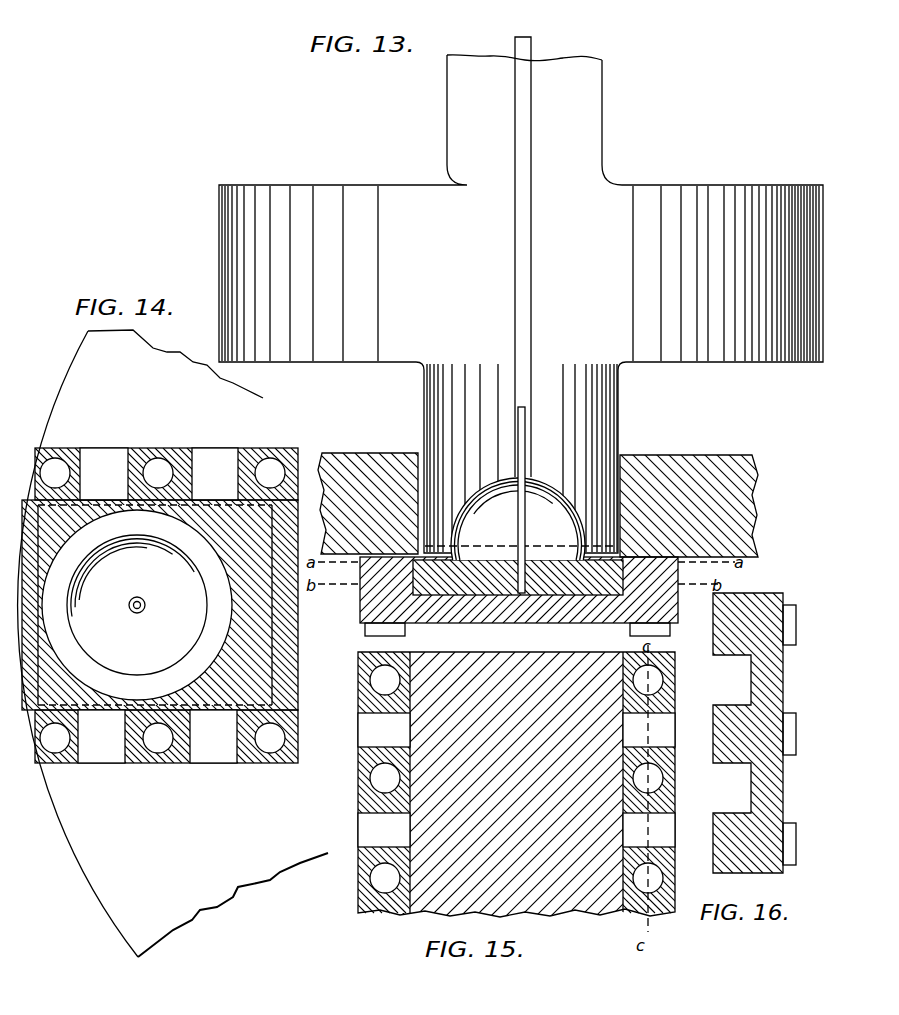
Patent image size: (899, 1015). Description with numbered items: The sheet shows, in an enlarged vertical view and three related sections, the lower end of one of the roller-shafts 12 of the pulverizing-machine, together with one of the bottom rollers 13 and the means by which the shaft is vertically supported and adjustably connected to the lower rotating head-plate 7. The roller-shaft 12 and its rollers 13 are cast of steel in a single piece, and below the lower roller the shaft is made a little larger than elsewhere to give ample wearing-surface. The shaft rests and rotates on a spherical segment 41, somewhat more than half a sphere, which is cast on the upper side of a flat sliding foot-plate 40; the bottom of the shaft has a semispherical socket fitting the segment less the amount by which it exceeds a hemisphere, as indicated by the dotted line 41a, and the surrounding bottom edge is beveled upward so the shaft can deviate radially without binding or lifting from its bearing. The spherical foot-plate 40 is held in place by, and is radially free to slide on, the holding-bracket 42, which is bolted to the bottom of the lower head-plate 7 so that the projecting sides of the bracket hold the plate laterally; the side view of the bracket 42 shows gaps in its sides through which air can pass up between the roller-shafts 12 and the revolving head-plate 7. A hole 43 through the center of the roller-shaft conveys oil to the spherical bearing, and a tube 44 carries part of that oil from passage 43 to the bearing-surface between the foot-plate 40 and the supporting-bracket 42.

In FIG. 13, the lower rotating head-plate 7 is at (359, 454).
In FIG. 14, the lower rotating head-plate 7 is at (173, 643).
In FIG. 13, the roller-shaft 12 is at (603, 100).
In FIG. 14, the roller-shaft 12 is at (137, 605).
In FIG. 13, the roller 13 is at (300, 263).
In FIG. 13, the spherical sliding foot-plate 40 is at (413, 574).
In FIG. 14, the spherical sliding foot-plate 40 is at (93, 512).
In FIG. 13, the spherical segment 41 is at (520, 519).
In FIG. 14, the spherical segment 41 is at (137, 605).
In FIG. 13, the dotted line indicating the hemisphere 41a is at (508, 515).
In FIG. 13, the holding-bracket 42 is at (360, 598).
In FIG. 14, the holding-bracket 42 is at (298, 641).
In FIG. 15, the holding-bracket 42 is at (590, 915).
In FIG. 16, the holding-bracket 42 is at (666, 733).
In FIG. 13, the oil hole 43 is at (529, 38).
In FIG. 14, the oil hole 43 is at (137, 597).
In FIG. 13, the oil tube 44 is at (518, 418).
In FIG. 14, the oil tube 44 is at (135, 612).